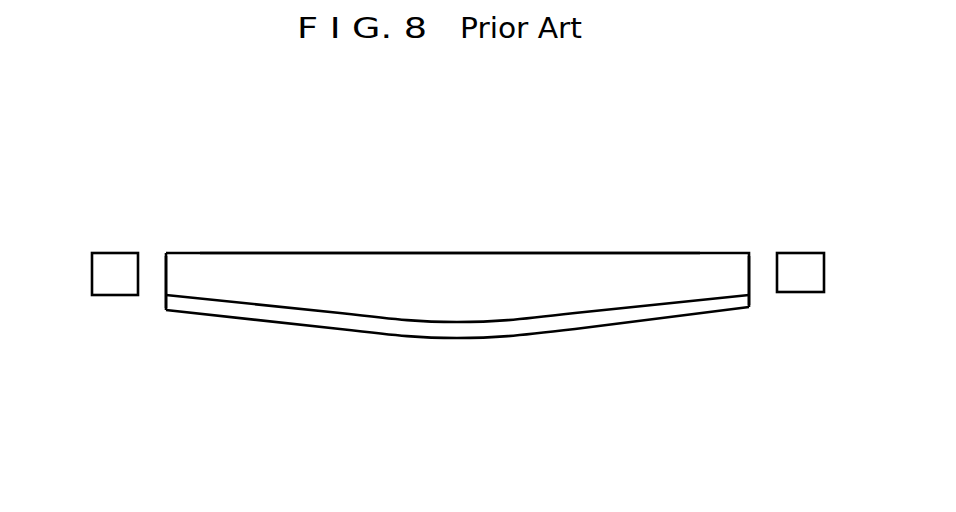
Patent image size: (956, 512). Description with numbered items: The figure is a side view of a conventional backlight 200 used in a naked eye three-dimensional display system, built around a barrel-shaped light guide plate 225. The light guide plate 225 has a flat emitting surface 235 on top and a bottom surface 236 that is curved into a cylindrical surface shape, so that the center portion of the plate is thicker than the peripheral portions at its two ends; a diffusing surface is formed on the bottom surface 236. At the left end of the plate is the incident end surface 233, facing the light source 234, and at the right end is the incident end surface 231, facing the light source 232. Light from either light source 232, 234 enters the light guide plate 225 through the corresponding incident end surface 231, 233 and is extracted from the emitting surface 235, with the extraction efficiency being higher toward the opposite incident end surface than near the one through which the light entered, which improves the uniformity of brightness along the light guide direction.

The backlight 200 is at (618, 230).
The light guide plate 225 is at (305, 273).
The emitting surface 235 is at (432, 253).
The bottom surface 236 is at (533, 335).
The light source 234 is at (119, 268).
The light source 232 is at (798, 268).
The incident end surface 233 is at (166, 272).
The incident end surface 231 is at (749, 270).